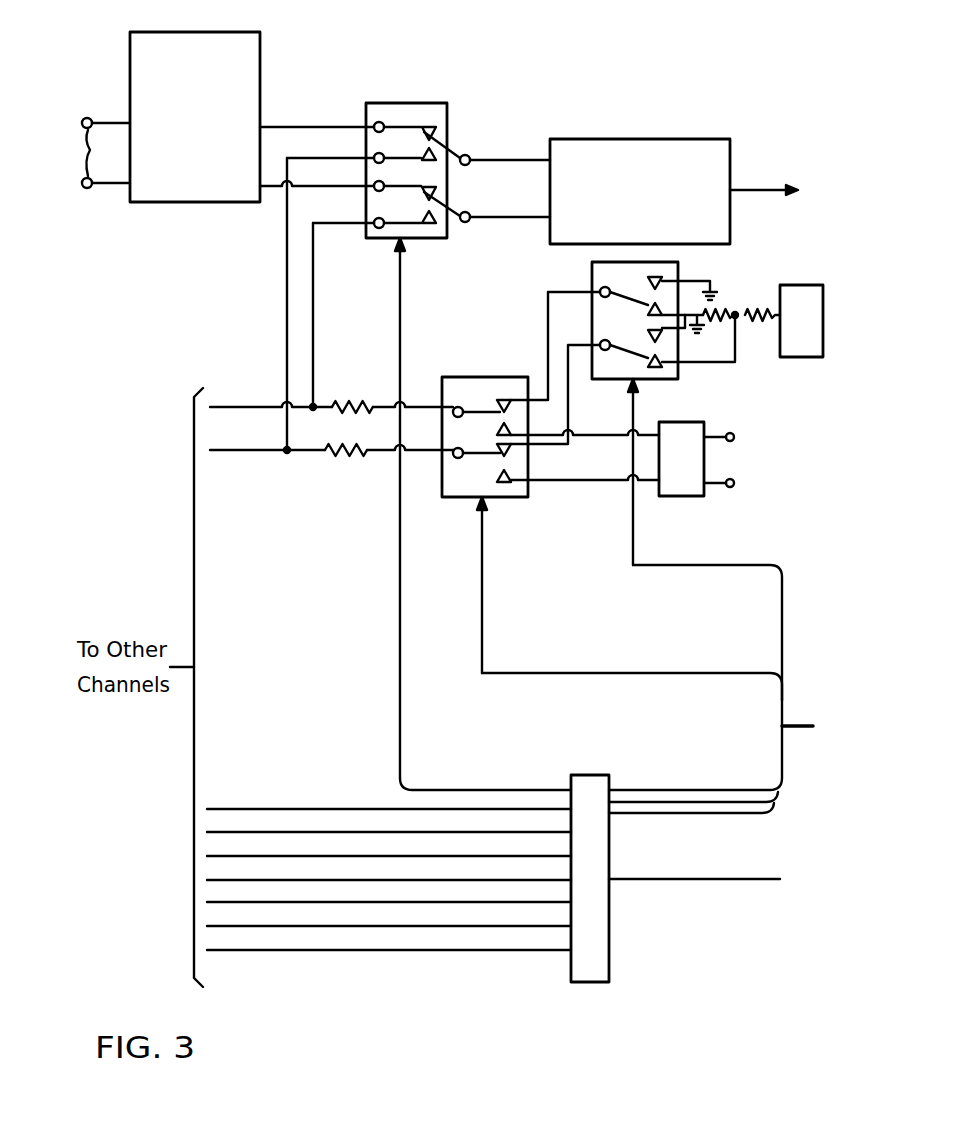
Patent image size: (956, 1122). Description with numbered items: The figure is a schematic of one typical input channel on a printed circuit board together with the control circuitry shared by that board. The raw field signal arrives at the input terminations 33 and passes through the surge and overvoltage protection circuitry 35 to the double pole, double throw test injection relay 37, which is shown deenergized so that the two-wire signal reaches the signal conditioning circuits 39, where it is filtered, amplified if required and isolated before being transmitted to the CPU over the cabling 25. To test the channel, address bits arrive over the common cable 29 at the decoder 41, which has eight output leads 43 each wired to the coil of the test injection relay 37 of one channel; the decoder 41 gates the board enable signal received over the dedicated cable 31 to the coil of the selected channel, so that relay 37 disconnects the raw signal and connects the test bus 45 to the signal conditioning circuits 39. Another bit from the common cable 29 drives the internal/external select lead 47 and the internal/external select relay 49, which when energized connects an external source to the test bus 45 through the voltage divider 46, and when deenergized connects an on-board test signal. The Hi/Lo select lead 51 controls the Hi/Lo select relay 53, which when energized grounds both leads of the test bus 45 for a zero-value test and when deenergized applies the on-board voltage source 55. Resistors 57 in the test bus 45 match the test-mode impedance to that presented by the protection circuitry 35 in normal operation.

The cabling 25 is at (757, 190).
The common cable 29 is at (813, 712).
The dedicated cable 31 is at (700, 880).
The input terminations 33 is at (106, 153).
The surge and overvoltage protection circuitry 35 is at (213, 32).
The test injection relay 37 is at (412, 103).
The signal conditioning circuits 39 is at (665, 139).
The decoder 41 is at (596, 775).
The output leads 43 is at (402, 697).
The test bus 45 is at (285, 300).
The voltage divider 46 is at (690, 422).
The internal/external select lead 47 is at (486, 672).
The internal/external select relay 49 is at (482, 377).
The Hi/Lo select lead 51 is at (632, 530).
The Hi/Lo select relay 53 is at (592, 272).
The on-board voltage source 55 is at (800, 285).
The resistors 57 is at (356, 395).